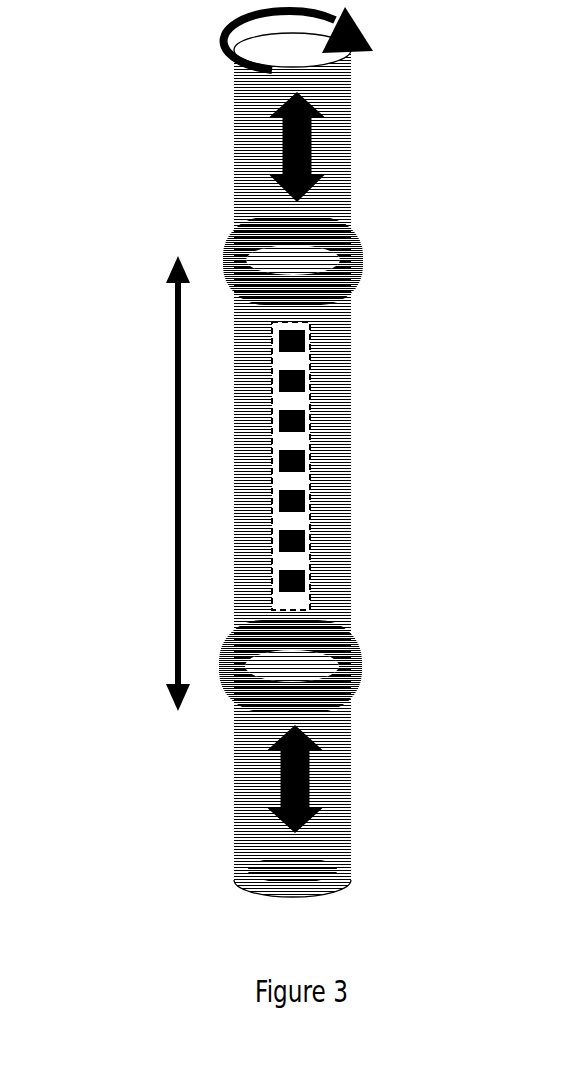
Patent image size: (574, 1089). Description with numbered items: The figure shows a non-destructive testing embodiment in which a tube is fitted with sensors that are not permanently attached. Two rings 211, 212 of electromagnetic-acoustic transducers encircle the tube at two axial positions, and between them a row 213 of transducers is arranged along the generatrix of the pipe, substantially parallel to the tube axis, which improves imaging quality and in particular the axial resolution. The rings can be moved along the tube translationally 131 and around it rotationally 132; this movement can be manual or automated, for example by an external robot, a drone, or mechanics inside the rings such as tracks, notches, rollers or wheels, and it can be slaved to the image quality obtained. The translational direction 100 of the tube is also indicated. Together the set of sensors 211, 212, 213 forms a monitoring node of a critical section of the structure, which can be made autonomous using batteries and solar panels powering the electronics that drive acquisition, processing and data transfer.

The pipe / tubular workpiece 100 is at (314, 772).
The translational movement 131 is at (318, 138).
The rotational movement 132 is at (377, 47).
The ring of EMAT transducers 211 is at (362, 242).
The ring of EMAT transducers 212 is at (360, 677).
The row of EMAT transducers 213 is at (308, 483).